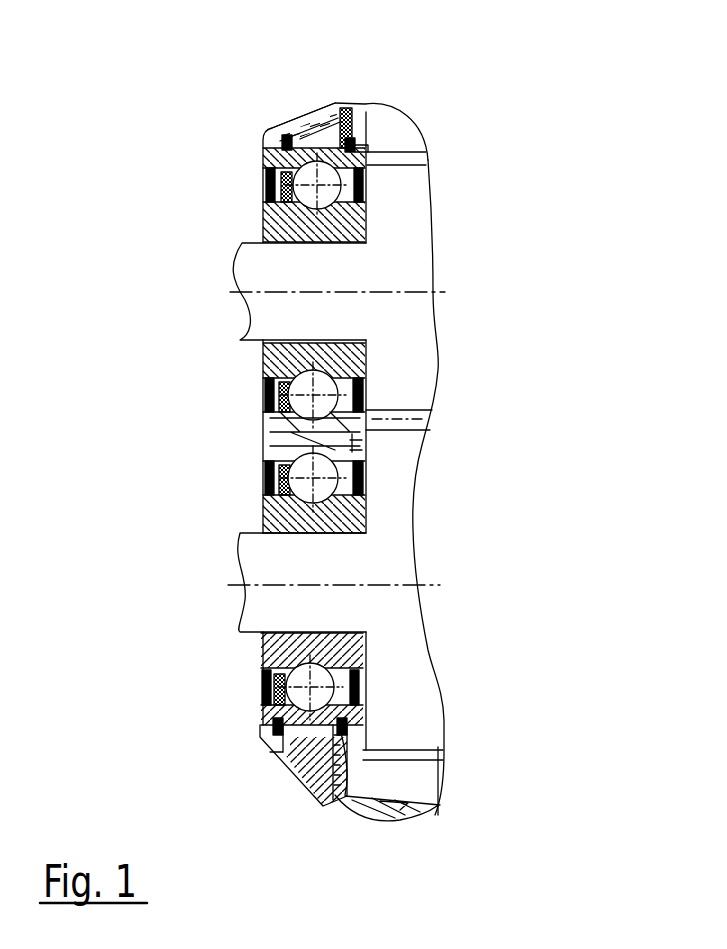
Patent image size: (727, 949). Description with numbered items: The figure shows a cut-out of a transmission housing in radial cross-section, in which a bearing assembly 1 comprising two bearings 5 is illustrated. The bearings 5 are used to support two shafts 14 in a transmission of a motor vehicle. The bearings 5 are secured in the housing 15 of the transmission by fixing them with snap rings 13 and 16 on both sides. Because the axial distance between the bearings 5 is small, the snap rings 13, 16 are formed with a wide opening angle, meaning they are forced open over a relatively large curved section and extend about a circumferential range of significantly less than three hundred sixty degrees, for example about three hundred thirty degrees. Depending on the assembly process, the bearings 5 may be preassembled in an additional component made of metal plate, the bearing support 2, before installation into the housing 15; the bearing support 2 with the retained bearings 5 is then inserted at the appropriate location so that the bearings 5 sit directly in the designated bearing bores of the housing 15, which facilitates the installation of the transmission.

The bearing assembly 1 is at (546, 435).
The bearing support 2 is at (353, 118).
The bearings 5 is at (238, 223).
The snap ring 13 is at (363, 133).
The shafts 14 is at (336, 283).
The housing 15 is at (330, 120).
The snap ring 16 is at (273, 128).